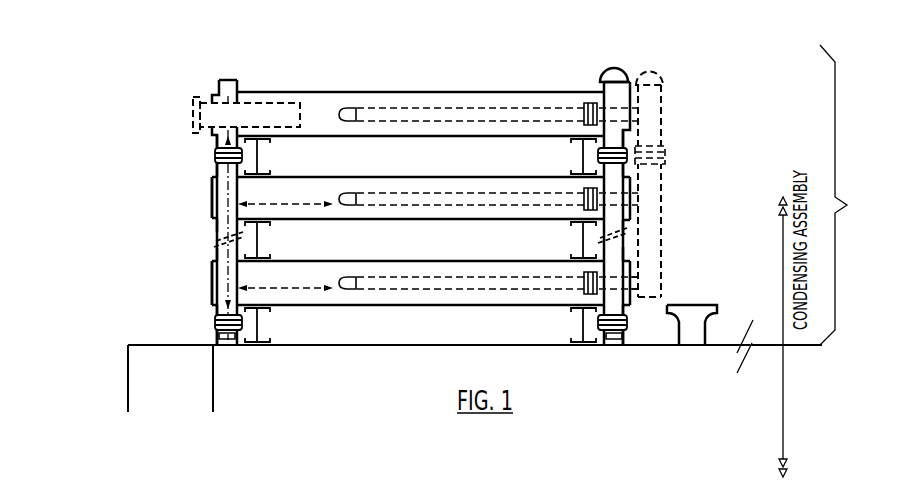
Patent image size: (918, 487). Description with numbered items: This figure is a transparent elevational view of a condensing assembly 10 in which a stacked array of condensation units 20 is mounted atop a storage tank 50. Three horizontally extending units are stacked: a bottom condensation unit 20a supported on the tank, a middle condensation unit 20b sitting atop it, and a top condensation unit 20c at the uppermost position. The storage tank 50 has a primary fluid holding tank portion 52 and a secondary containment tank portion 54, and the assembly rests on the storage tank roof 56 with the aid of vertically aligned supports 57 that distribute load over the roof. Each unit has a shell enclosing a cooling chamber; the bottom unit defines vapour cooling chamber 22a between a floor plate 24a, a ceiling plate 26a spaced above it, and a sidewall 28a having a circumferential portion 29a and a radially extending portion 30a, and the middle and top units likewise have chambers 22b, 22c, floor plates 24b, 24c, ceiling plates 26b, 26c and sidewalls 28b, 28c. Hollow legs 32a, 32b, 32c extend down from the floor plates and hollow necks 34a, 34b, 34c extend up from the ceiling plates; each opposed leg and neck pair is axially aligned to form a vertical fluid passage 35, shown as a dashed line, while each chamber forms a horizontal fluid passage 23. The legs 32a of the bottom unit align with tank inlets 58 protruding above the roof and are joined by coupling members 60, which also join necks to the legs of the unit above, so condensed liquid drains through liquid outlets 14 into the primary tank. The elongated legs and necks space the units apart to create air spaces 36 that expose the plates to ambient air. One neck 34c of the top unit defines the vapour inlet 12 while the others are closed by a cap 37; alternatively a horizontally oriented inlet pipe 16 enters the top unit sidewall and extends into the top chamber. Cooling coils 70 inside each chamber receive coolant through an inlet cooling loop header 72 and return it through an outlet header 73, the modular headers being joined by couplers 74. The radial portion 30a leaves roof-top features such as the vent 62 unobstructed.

The condensing assembly 10 is at (848, 195).
The vapour inlet 12 is at (227, 77).
The liquid outlet 14 is at (127, 315).
The horizontally oriented inlet pipe 16 is at (192, 112).
The condensation units 20 is at (326, 206).
The bottom condensation unit 20a is at (126, 282).
The middle condensation unit 20b is at (124, 198).
The top condensation unit 20c is at (124, 112).
The vapour cooling chamber 22a is at (420, 248).
The middle chamber 22b is at (420, 165).
The top cooling chamber 22c is at (420, 85).
The horizontal fluid passage 23 is at (285, 236).
The floor plate 24a is at (420, 318).
The floor plate 24b is at (420, 233).
The floor plate 24c is at (420, 152).
The ceiling plate 26a is at (420, 261).
The ceiling plate 26b is at (420, 178).
The ceiling plate 26c is at (420, 95).
The sidewall 28a is at (209, 277).
The sidewall 28b is at (209, 203).
The sidewall 28c is at (184, 80).
The circumferential portion 29a is at (213, 286).
The radially extending portion 30a is at (636, 270).
The hollow leg 32a is at (217, 313).
The hollow leg 32b is at (217, 228).
The hollow leg 32c is at (217, 140).
The hollow neck 34a is at (217, 253).
The hollow neck 34b is at (217, 172).
The hollow neck 34c is at (238, 83).
The vertical fluid passage 35 is at (233, 193).
The air space 36 is at (407, 173).
The cap 37 is at (613, 68).
The storage tank 50 is at (730, 423).
The primary fluid holding tank portion 52 is at (215, 397).
The secondary containment tank portion 54 is at (130, 387).
The storage tank roof 56 is at (386, 347).
The support 57 is at (268, 157).
The storage tank inlet 58 is at (222, 340).
The coupling member 60 is at (215, 153).
The vent 62 is at (706, 333).
The cooling coil 70 is at (488, 180).
The inlet cooling loop header 72 is at (667, 91).
The outlet header 73 is at (667, 91).
The coupler 74 is at (666, 155).